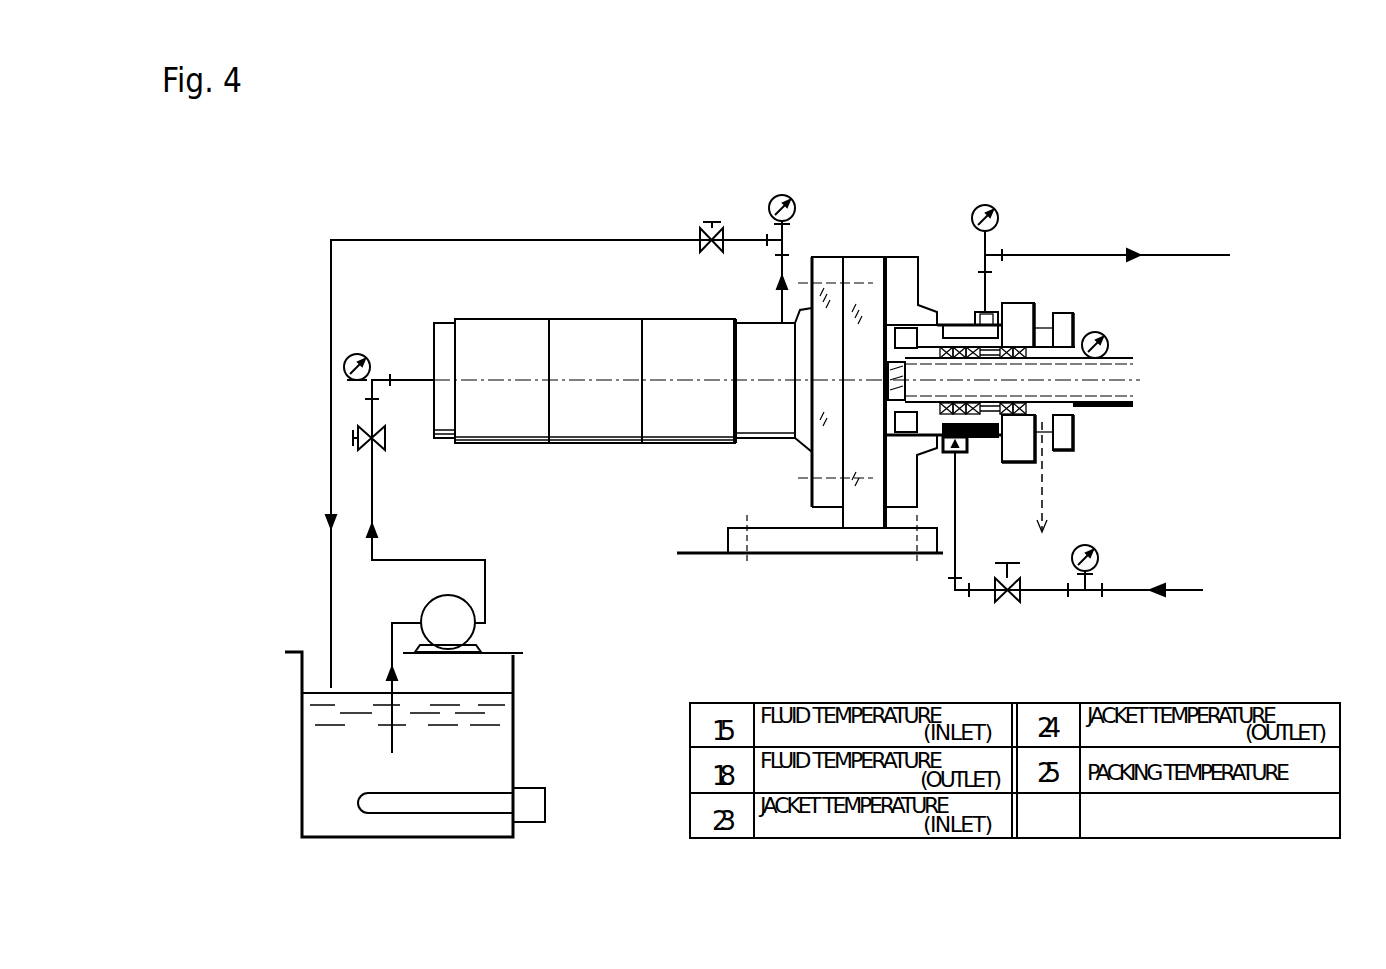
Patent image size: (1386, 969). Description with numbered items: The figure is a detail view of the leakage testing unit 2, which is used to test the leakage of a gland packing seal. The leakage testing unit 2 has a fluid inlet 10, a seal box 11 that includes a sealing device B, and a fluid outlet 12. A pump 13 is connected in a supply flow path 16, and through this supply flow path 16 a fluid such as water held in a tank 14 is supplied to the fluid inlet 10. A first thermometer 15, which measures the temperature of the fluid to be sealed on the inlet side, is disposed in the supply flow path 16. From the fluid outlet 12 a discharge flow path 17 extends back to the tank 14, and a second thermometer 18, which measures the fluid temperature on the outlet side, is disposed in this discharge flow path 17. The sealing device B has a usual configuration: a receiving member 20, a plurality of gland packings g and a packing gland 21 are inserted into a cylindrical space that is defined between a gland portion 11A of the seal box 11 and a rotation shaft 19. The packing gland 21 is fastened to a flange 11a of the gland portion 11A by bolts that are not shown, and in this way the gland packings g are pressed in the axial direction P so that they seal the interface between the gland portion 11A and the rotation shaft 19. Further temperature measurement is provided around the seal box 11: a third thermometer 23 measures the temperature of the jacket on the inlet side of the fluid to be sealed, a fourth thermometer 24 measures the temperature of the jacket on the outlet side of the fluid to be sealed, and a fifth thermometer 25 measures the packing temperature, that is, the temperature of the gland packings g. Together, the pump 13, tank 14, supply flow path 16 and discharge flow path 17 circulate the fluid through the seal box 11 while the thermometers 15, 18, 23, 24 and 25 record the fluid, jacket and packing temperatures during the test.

The leakage testing unit 2 is at (1172, 195).
The fluid inlet 10 is at (433, 382).
The seal box 11 is at (893, 267).
The gland portion 11A is at (937, 422).
The flange 11a is at (1013, 307).
The fluid outlet 12 is at (778, 322).
The pump 13 is at (458, 612).
The tank 14 is at (513, 678).
The first thermometer 15 is at (358, 355).
The supply flow path 16 is at (460, 560).
The discharge flow path 17 is at (467, 240).
The second thermometer 18 is at (772, 200).
The rotation shaft 19 is at (1118, 408).
The receiving member 20 is at (933, 350).
The packing gland 21 is at (1067, 452).
The third thermometer 23 is at (1098, 557).
The fourth thermometer 24 is at (1000, 208).
The fifth thermometer 25 is at (1106, 338).
The sealing device B is at (1047, 386).
The axial direction P is at (684, 386).
The gland packings g is at (985, 430).